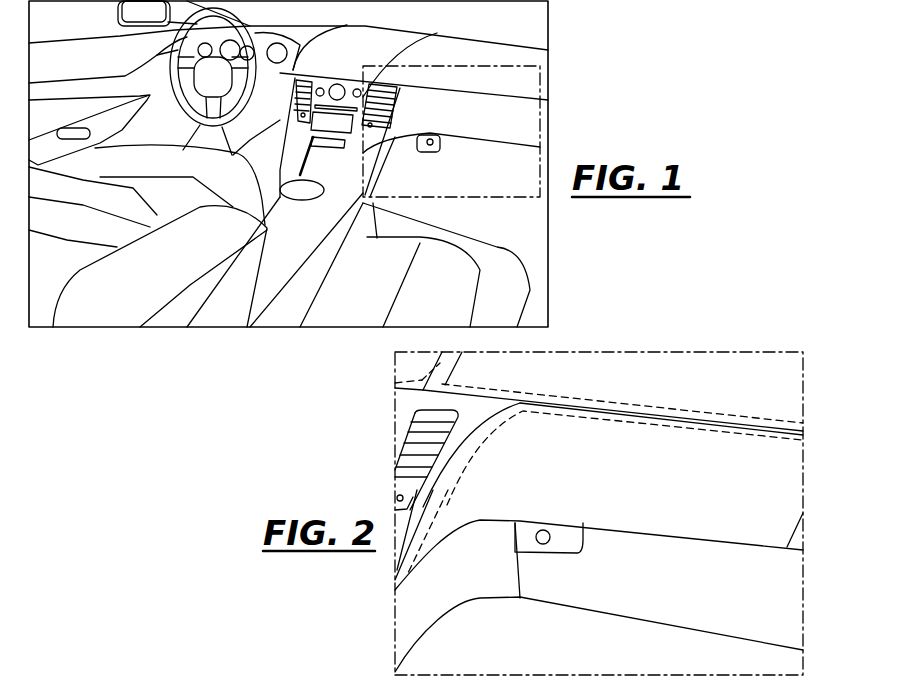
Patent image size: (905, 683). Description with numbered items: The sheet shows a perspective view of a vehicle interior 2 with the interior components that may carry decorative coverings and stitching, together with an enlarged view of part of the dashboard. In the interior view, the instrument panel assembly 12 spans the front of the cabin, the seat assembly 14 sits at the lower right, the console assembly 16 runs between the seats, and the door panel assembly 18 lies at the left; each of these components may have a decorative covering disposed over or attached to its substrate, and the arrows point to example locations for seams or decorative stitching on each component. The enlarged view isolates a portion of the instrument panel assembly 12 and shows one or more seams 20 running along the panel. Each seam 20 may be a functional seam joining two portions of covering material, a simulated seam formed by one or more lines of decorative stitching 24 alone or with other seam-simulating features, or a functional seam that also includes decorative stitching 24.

In FIG. 1, the vehicle interior 2 is at (517, 65).
In FIG. 1, the instrument panel assembly 12 is at (516, 90).
In FIG. 2, the instrument panel assembly 12 is at (755, 370).
In FIG. 1, the seat assembly 14 is at (493, 255).
In FIG. 1, the console assembly 16 is at (170, 297).
In FIG. 1, the door panel assembly 18 is at (101, 130).
In FIG. 2, the seam 20 is at (600, 407).
In FIG. 2, the decorative stitching 24 is at (508, 390).